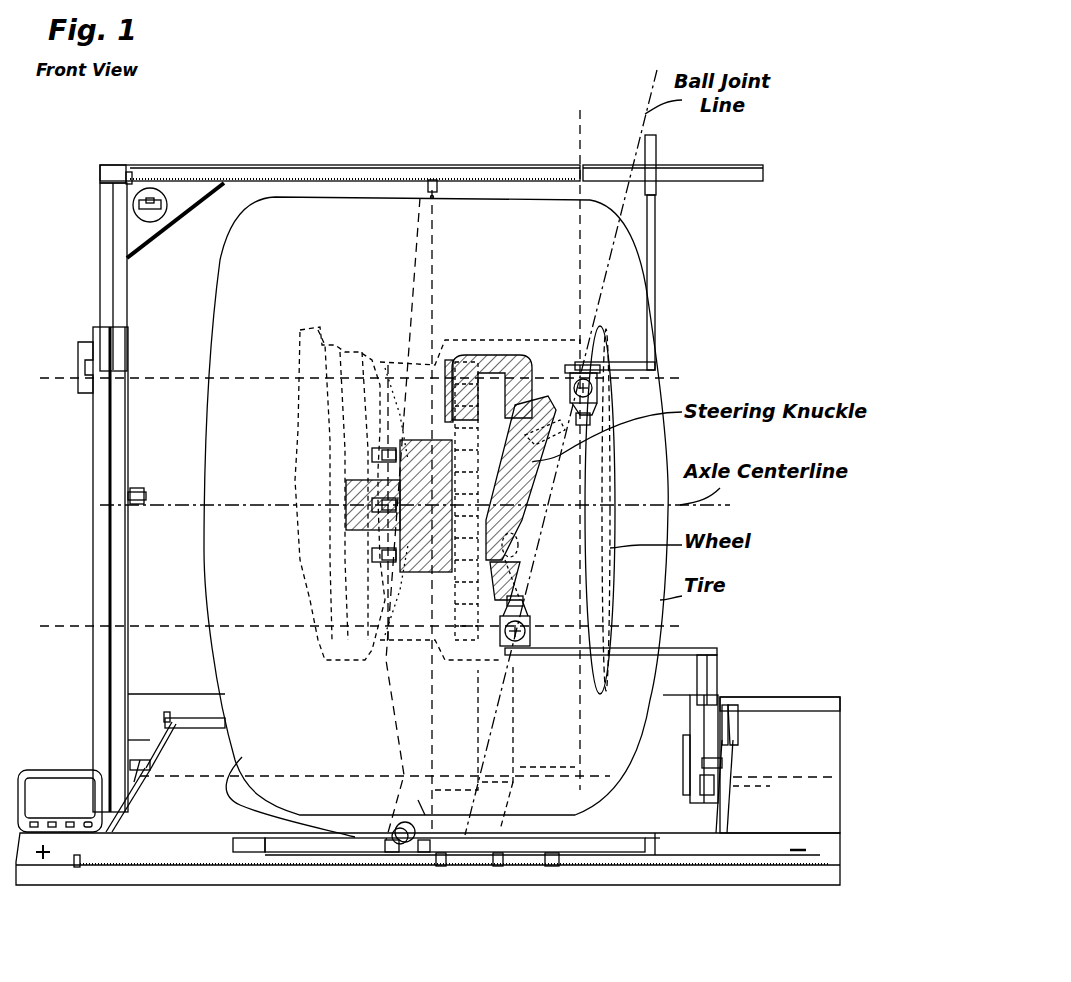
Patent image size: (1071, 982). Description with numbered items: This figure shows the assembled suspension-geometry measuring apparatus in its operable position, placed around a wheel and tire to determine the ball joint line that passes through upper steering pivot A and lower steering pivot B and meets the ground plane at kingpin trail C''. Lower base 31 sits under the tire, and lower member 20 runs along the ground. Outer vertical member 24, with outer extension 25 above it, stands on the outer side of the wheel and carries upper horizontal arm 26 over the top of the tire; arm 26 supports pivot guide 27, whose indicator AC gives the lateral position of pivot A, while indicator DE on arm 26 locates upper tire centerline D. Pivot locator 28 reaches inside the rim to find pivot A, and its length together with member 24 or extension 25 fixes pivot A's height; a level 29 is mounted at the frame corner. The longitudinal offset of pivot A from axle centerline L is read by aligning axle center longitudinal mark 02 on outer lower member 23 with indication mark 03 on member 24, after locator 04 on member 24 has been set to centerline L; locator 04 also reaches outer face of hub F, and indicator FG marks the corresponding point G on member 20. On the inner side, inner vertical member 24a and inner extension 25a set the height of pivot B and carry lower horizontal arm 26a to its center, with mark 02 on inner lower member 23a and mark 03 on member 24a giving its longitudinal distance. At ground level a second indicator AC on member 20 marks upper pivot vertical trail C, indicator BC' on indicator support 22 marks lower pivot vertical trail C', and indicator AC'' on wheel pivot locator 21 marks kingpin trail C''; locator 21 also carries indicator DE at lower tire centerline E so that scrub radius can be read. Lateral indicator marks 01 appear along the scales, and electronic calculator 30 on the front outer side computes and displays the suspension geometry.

The lateral indicator mark 01 is at (125, 181).
The axle center longitudinal mark 02 is at (145, 778).
The indication mark 03 is at (145, 755).
The locator 04 is at (138, 490).
The lower member 20 is at (836, 700).
The wheel pivot locator 21 is at (268, 853).
The indicator support 22 is at (688, 866).
The outer lower member 23 is at (125, 810).
The inner lower member 23a is at (728, 752).
The outer vertical member 24 is at (95, 706).
The inner vertical member 24a is at (688, 776).
The outer extension 25 is at (100, 240).
The inner extension 25a is at (718, 678).
The upper horizontal arm 26 is at (165, 167).
The lower horizontal arm 26a is at (690, 650).
The pivot guide 27 is at (656, 168).
The pivot locator 28 is at (655, 270).
The level 29 is at (167, 206).
The electronic calculator 30 is at (55, 772).
The lower base 31 is at (830, 810).
The upper steering pivot A is at (568, 378).
The lower steering pivot B is at (532, 628).
The upper tire centerline D is at (432, 196).
The lower tire centerline E is at (432, 802).
The outer face of hub F is at (402, 570).
The hub's vertical location at ground G is at (400, 775).
The axle centerline L is at (346, 502).
The upper steering pivot vertical trail C is at (549, 752).
The lower steering pivot vertical trail C' is at (499, 747).
The kingpin trail C'' is at (456, 732).
The indicator for line D to E DE is at (432, 172).
The indicator for line A to C AC is at (549, 515).
The indicator for line A to C" AC'' is at (426, 886).
The indicator for line B to C' BC' is at (491, 886).
The indicator for line F to G FG is at (348, 858).